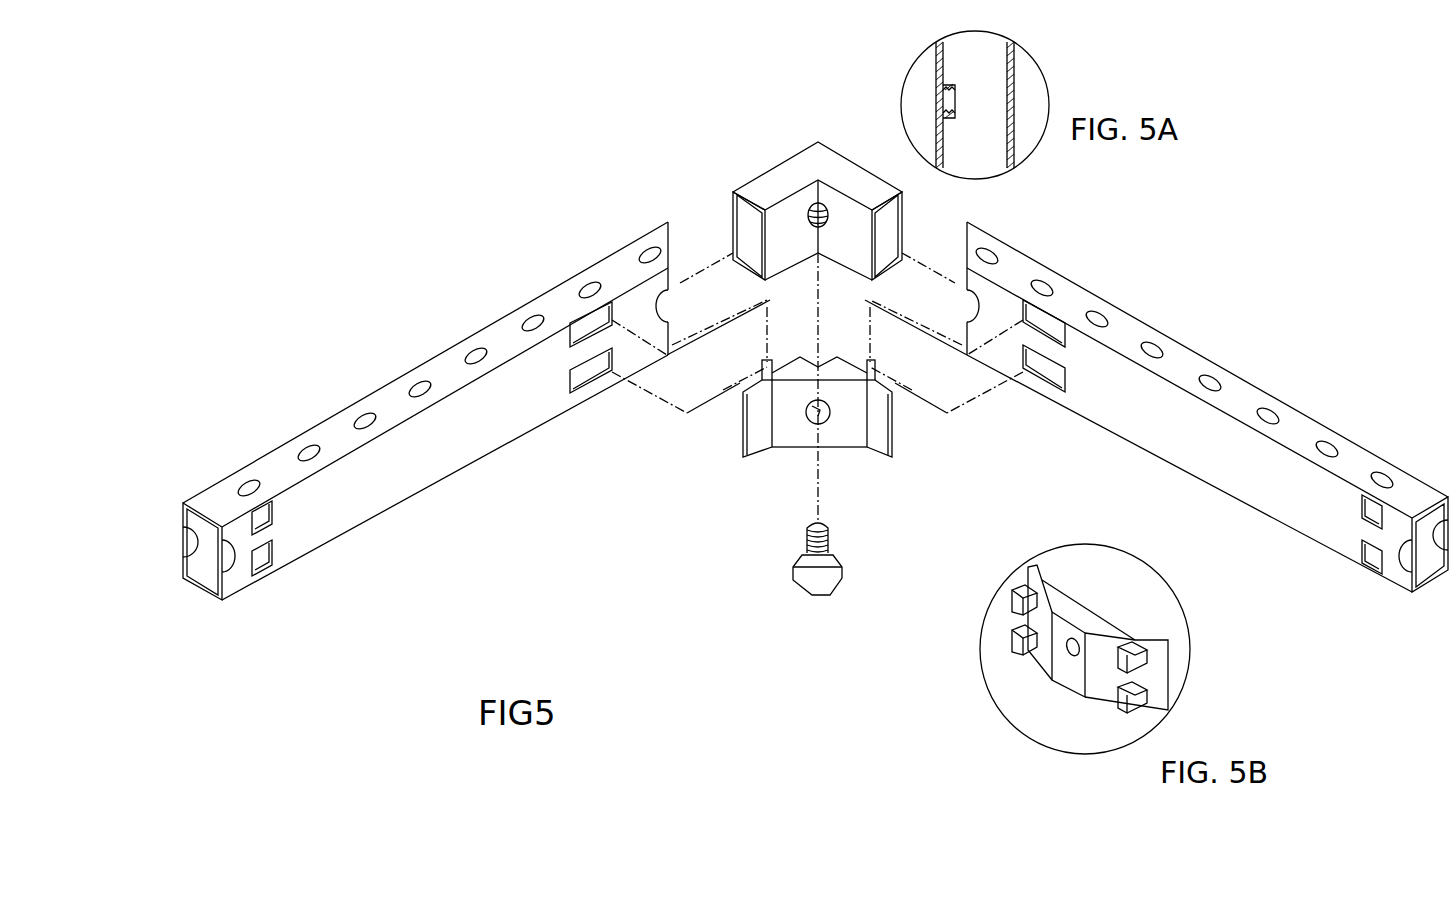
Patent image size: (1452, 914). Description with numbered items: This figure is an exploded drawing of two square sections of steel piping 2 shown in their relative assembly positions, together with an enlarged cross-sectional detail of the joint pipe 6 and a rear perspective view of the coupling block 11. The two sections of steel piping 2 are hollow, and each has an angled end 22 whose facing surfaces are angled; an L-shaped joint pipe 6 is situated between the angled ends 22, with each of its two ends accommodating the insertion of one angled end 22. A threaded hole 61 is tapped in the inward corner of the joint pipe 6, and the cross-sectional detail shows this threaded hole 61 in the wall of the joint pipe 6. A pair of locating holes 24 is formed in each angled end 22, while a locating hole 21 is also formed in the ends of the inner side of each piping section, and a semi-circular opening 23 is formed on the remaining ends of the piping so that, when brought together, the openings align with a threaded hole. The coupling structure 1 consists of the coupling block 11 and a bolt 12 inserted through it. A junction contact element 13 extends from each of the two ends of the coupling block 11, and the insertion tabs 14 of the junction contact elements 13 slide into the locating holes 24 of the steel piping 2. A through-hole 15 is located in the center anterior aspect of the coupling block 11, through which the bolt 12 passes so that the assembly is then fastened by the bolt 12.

In FIG. 5, the coupling structure 1 is at (783, 491).
In FIG. 5B, the coupling structure 1 is at (1092, 669).
In FIG. 5, the coupling block 11 is at (833, 431).
In FIG. 5, the bolt 12 is at (801, 582).
In FIG. 5, the junction contact element 13 is at (782, 425).
In FIG. 5B, the junction contact element 13 is at (1142, 637).
In FIG. 5B, the insertion tabs 14 is at (1037, 702).
In FIG. 5, the through-hole 15 is at (786, 452).
In FIG. 5B, the through-hole 15 is at (1032, 709).
In FIG. 5, the steel piping 2 is at (798, 424).
In FIG. 5, the locating hole 21 is at (810, 595).
In FIG. 5, the angled end 22 is at (817, 237).
In FIG. 5, the semi-circular opening 23 is at (798, 564).
In FIG. 5, the locating holes 24 is at (818, 402).
In FIG. 5, the joint pipe 6 is at (805, 201).
In FIG. 5A, the joint pipe 6 is at (999, 92).
In FIG. 5, the threaded hole 61 is at (798, 259).
In FIG. 5A, the threaded hole 61 is at (973, 147).